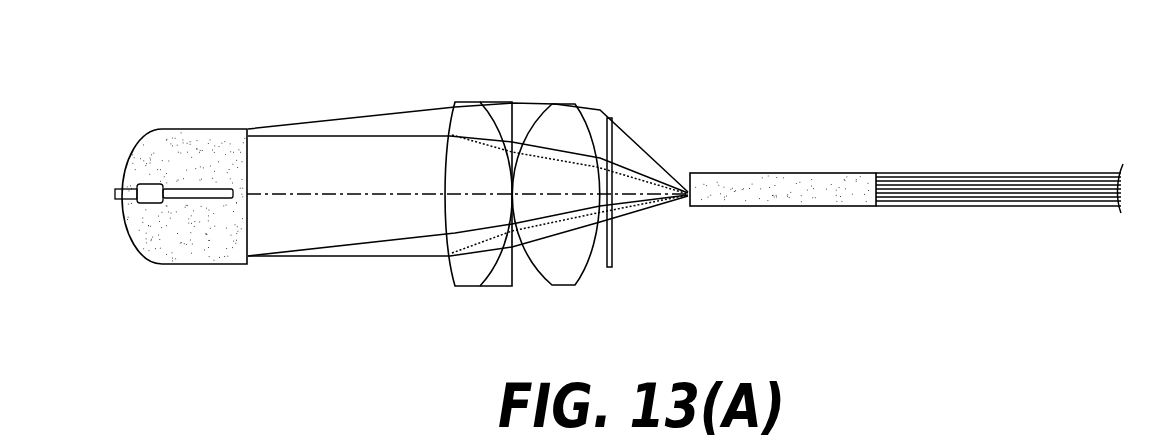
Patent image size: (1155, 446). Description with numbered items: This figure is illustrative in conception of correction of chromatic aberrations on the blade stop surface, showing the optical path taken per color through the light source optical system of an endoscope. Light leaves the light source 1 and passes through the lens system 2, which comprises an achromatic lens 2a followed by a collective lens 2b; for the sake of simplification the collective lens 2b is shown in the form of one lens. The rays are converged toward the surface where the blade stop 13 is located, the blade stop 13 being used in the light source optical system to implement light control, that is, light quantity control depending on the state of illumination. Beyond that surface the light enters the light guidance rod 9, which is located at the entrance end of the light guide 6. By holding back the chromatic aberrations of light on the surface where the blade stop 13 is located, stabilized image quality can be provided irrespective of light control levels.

The light source 1 is at (182, 114).
The lens system 2 is at (533, 200).
The achromatic lens 2a is at (413, 160).
The collective lens 2b is at (635, 164).
The blade stop 13 is at (787, 239).
The light guidance rod 9 is at (770, 210).
The light guide 6 is at (999, 206).